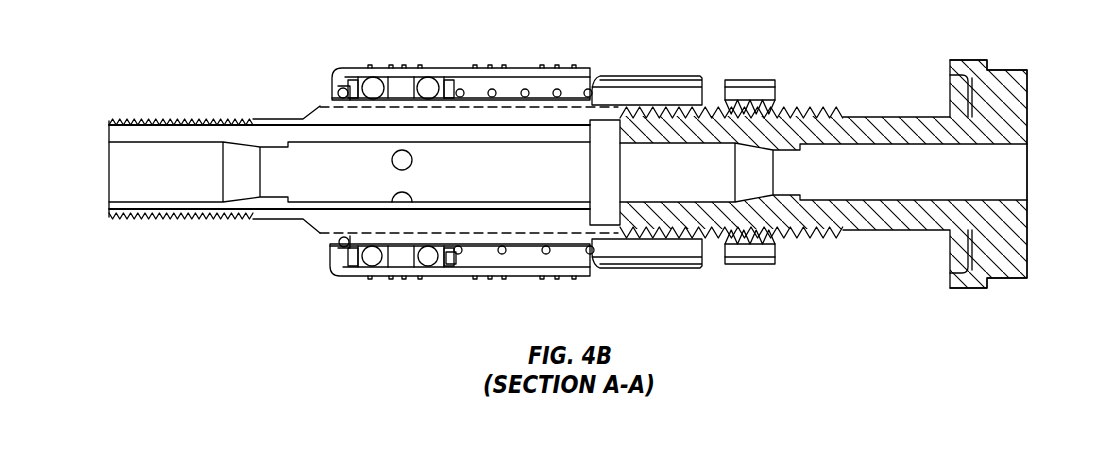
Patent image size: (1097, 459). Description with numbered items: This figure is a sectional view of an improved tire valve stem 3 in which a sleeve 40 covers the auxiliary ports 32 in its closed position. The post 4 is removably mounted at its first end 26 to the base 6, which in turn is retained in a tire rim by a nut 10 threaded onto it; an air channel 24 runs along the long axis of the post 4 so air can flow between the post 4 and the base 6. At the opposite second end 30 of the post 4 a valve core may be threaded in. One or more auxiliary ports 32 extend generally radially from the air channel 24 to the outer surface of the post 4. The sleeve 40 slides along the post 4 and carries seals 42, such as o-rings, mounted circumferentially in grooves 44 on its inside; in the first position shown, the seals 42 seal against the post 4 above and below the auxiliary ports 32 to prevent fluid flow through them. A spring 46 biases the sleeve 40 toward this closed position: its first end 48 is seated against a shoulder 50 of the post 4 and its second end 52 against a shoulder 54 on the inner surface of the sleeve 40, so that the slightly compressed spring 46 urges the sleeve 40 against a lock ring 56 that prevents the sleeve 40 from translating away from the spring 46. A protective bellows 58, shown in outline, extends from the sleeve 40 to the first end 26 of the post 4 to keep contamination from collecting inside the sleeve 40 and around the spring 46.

The coupling assembly 3 is at (163, 293).
The post 4 is at (465, 156).
The base 6 is at (1008, 66).
The nut 10 is at (762, 80).
The air channel 24 is at (305, 190).
The first end of the post 26 is at (706, 95).
The second end of the post 30 is at (138, 118).
The auxiliary port 32 is at (395, 195).
The sleeve 40 is at (348, 68).
The seals 42 is at (376, 78).
The grooves 44 is at (354, 80).
The spring 46 is at (527, 88).
The first end of the spring 48 is at (588, 280).
The shoulder of the post 50 is at (593, 67).
The second end of the spring 52 is at (460, 254).
The shoulder of the sleeve 54 is at (452, 264).
The lock ring 56 is at (340, 90).
The bellows 58 is at (672, 75).